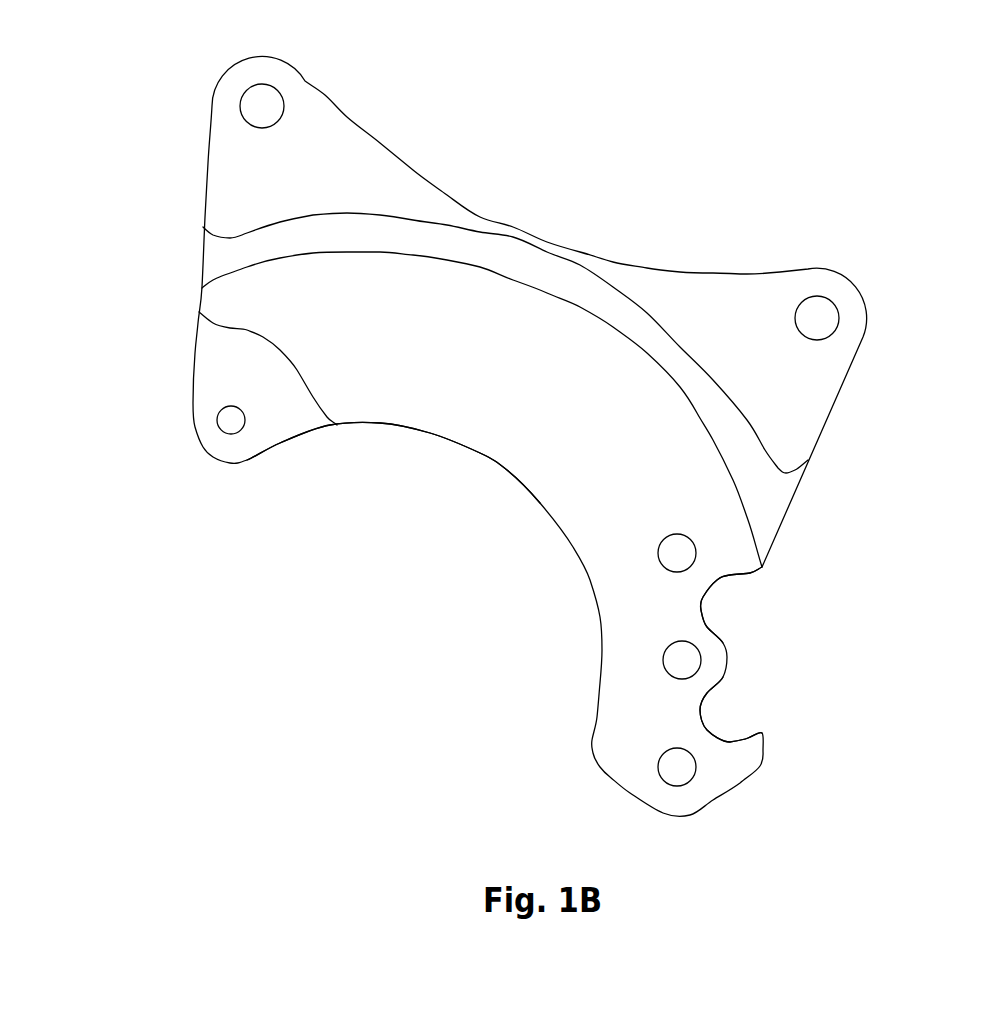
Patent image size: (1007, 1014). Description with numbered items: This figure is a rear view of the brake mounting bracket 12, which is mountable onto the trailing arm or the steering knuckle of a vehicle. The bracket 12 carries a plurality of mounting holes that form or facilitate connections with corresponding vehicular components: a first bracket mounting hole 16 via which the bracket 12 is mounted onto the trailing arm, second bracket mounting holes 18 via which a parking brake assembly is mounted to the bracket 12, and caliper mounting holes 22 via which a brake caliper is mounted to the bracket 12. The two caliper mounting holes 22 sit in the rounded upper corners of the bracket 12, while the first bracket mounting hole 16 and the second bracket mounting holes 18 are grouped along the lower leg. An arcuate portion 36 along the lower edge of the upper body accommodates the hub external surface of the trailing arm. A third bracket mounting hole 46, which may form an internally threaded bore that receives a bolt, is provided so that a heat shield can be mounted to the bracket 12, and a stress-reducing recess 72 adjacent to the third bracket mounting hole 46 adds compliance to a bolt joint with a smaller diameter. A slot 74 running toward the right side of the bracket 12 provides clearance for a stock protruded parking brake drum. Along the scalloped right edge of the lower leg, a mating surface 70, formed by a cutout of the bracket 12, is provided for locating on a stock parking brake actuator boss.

The brake mounting bracket 12 is at (105, 52).
The first bracket mounting hole 16 is at (704, 657).
The second bracket mounting hole 18 is at (697, 556).
The caliper mounting hole 22 is at (284, 109).
The arcuate portion 36 is at (478, 452).
The third bracket mounting hole 46 is at (240, 431).
The mating surface 70 is at (764, 572).
The stress-reducing recess 72 is at (229, 331).
The slot 74 is at (714, 438).